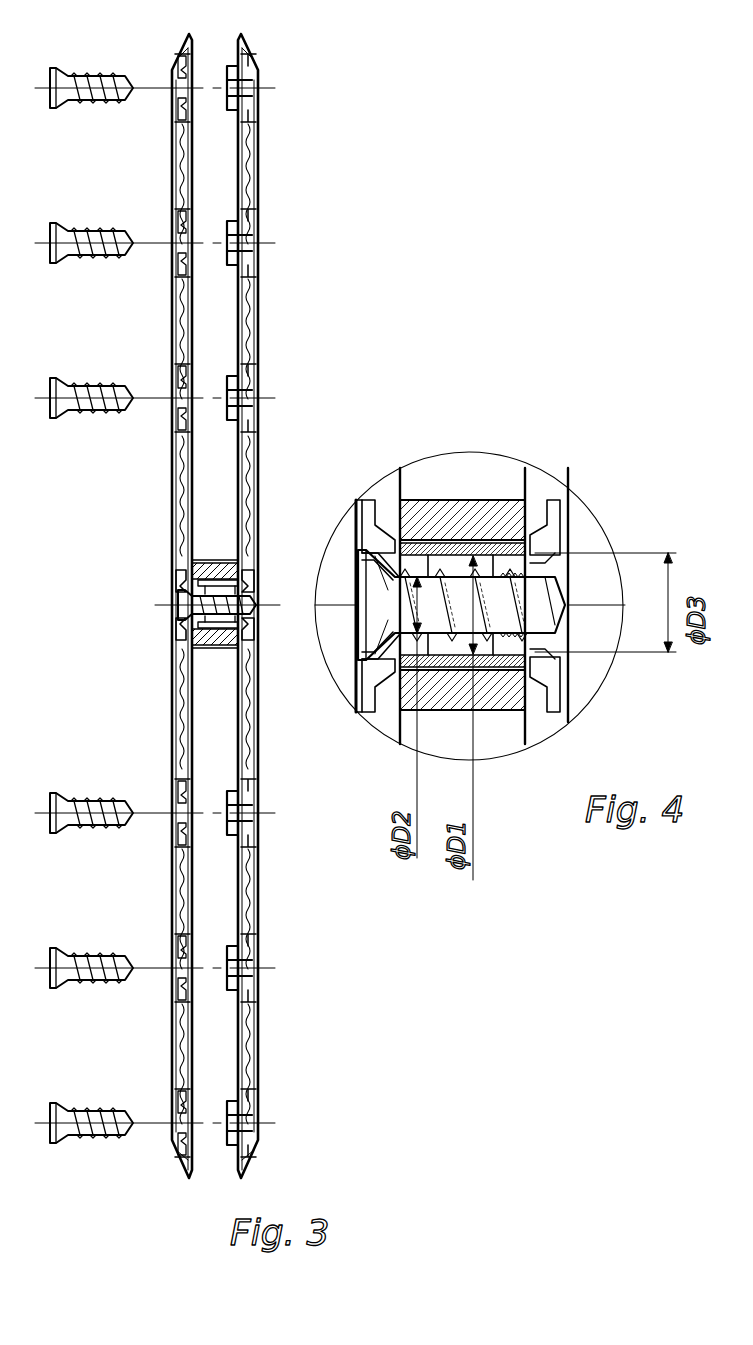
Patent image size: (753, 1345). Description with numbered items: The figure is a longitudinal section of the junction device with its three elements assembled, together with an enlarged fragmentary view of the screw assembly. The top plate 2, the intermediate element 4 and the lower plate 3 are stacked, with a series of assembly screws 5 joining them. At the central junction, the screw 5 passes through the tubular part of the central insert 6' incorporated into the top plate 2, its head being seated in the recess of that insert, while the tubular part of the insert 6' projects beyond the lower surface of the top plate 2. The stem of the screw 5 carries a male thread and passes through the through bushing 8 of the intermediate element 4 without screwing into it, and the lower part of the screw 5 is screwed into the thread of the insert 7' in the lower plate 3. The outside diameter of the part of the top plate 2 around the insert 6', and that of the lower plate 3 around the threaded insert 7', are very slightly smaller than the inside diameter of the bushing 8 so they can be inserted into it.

In FIG. 3, the top plate 2 is at (178, 515).
In FIG. 3, the lower plate 3 is at (258, 315).
In FIG. 4, the intermediate element 4 is at (430, 522).
In FIG. 3, the assembly screw 5 is at (175, 598).
In FIG. 4, the assembly screw 5 is at (378, 628).
In FIG. 3, the central insert 6' is at (132, 629).
In FIG. 4, the central insert 6' is at (379, 561).
In FIG. 3, the threaded insert 7' is at (269, 635).
In FIG. 4, the threaded insert 7' is at (579, 571).
In FIG. 3, the through bushing 8 is at (232, 565).
In FIG. 4, the through bushing 8 is at (463, 548).